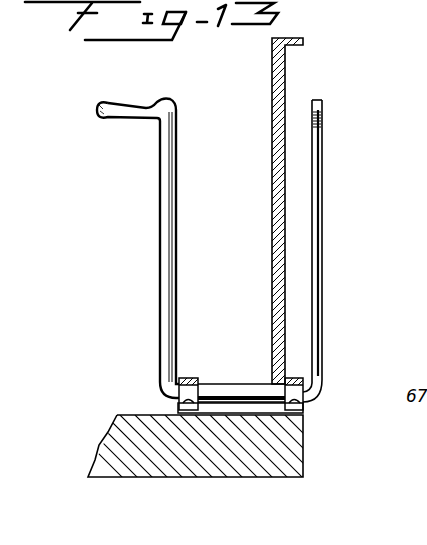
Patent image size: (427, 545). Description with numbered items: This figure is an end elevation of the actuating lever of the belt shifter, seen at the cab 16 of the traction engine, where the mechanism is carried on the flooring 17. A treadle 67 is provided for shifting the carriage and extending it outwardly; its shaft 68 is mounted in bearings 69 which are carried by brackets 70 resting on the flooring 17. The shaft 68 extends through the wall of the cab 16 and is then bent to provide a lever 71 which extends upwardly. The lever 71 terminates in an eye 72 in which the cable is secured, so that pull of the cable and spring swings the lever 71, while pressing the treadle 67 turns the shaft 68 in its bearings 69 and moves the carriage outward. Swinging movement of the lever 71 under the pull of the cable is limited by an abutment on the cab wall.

The cab 16 is at (280, 240).
The flooring 17 is at (285, 452).
The treadle 67 is at (163, 99).
The shaft 68 is at (211, 390).
The bearings 69 is at (172, 394).
The brackets 70 is at (228, 411).
The lever 71 is at (322, 298).
The eye 72 is at (316, 117).